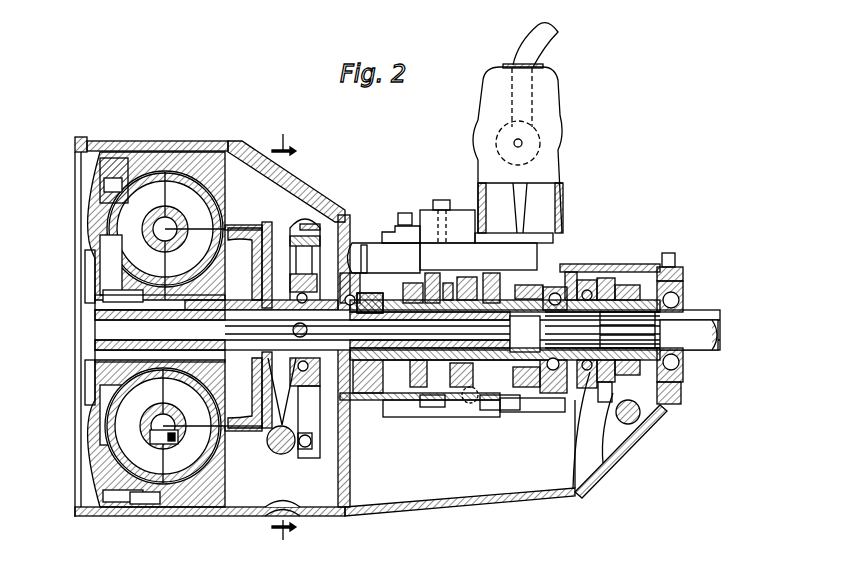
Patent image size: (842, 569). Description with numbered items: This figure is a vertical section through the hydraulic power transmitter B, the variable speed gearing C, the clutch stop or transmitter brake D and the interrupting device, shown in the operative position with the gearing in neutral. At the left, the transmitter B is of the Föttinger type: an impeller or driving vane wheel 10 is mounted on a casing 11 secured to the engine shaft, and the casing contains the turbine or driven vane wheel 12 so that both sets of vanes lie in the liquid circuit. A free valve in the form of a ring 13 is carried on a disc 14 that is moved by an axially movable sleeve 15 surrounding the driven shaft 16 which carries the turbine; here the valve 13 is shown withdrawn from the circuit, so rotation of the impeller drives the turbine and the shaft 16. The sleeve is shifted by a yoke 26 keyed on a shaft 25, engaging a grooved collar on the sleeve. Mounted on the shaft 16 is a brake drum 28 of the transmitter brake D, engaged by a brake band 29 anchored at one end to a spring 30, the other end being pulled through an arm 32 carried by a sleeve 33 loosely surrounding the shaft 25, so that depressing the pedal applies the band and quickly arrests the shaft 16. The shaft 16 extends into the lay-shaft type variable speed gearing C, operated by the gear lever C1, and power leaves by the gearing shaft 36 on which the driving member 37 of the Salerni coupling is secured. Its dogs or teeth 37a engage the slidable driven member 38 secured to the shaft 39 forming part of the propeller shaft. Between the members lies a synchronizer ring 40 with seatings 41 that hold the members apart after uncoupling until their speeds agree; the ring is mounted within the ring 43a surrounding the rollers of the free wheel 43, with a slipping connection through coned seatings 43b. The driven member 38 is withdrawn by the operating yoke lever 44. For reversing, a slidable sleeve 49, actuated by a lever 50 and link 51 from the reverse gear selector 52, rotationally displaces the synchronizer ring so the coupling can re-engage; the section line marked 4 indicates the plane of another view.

The hydraulic power transmitter B is at (151, 120).
The clutch stop or transmitter brake D is at (250, 182).
The variable speed gearing C is at (438, 210).
The operating lever C1 is at (540, 44).
The section line 4- 4 is at (284, 337).
The impeller or driving vane wheel 10 is at (190, 165).
The casing 11 is at (177, 162).
The turbine or driven vane wheel 12 is at (148, 168).
The valve ring 13 is at (240, 232).
The disc or plate 14 is at (268, 235).
The axially movable sleeve 15 is at (195, 362).
The driven shaft 16 is at (162, 365).
The shaft 25 is at (280, 455).
The yoke 26 is at (265, 436).
The brake drum 28 is at (342, 240).
The brake band 29 is at (328, 238).
The spring 30 is at (305, 224).
The arm 32 is at (325, 462).
The sleeve 33 is at (303, 450).
The variable speed gearing shaft 36 is at (577, 296).
The driving member 37 is at (610, 300).
The dogs or teeth 37a is at (606, 385).
The driven member 38 is at (300, 330).
The shaft 39 is at (688, 300).
The synchronizer ring 40 is at (625, 300).
The seatings or distance pieces 41 is at (628, 292).
The free wheel or ratchet device 43 is at (590, 296).
The ring 43a is at (575, 470).
The coned seatings 43b is at (636, 445).
The operating yoke lever 44 is at (665, 375).
The slidable sleeve 49 is at (670, 262).
The lever 50 is at (645, 408).
The link 51 is at (492, 412).
The reverse gear lever or selector 52 is at (432, 405).